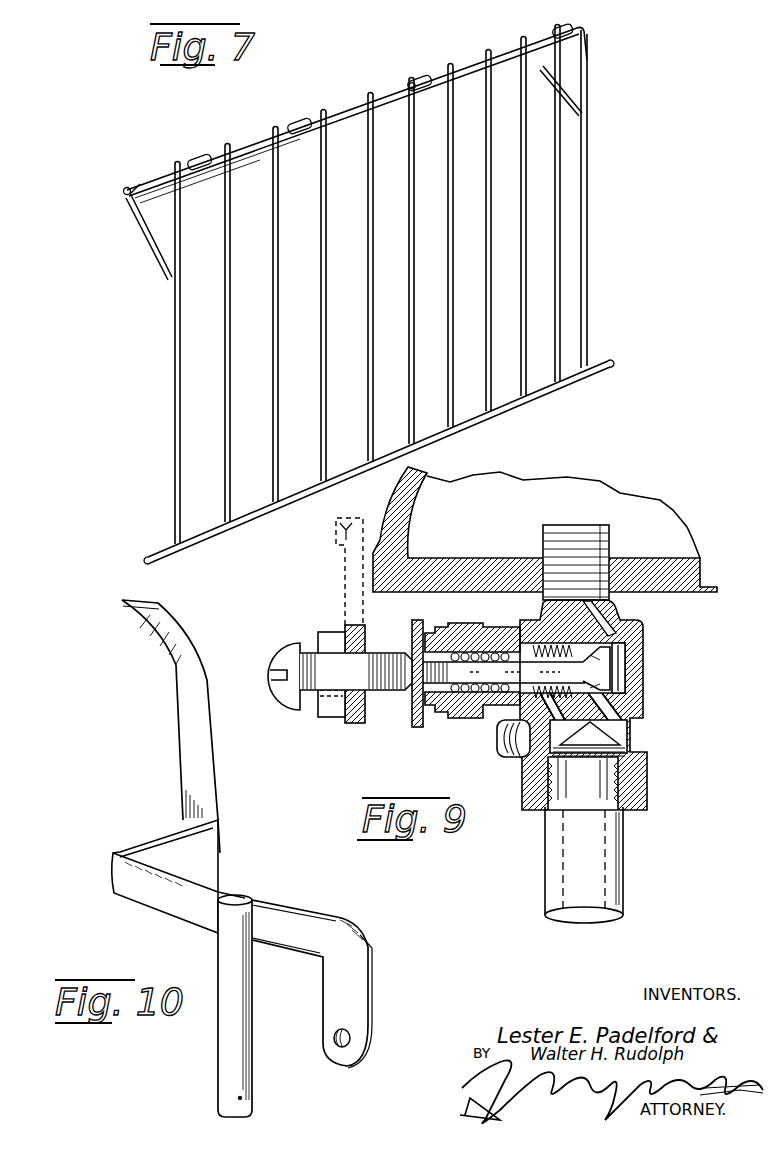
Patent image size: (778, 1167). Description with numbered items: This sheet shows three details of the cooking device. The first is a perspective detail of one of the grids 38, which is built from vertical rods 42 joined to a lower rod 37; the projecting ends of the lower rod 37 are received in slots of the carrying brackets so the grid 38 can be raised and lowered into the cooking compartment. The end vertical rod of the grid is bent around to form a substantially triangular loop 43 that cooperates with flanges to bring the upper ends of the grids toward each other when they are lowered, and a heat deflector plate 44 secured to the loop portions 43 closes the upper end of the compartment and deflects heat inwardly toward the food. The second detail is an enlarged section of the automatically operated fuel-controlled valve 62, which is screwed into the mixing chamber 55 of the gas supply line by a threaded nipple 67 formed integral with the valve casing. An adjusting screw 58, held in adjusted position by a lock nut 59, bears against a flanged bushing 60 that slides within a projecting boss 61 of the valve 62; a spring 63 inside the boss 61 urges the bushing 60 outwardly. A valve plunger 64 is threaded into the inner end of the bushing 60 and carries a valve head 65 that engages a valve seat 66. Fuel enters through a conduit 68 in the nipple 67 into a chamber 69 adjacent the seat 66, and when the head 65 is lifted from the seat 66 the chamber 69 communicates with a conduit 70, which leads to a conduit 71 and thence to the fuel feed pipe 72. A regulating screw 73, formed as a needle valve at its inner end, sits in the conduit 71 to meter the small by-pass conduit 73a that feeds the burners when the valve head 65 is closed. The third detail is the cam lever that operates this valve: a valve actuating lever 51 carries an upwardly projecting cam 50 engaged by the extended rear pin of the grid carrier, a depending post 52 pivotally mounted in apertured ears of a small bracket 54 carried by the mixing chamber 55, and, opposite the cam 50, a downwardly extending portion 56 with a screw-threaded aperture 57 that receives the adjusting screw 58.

In FIG. 7, the lower rod 37 is at (606, 368).
In FIG. 7, the grid 38 is at (387, 93).
In FIG. 7, the vertical rod 42 is at (357, 286).
In FIG. 7, the loop 43 is at (146, 226).
In FIG. 7, the heat deflector plate 44 is at (339, 122).
In FIG. 10, the cam 50 is at (203, 657).
In FIG. 9, the valve actuating lever 51 is at (343, 582).
In FIG. 10, the valve actuating lever 51 is at (275, 871).
In FIG. 10, the depending post 52 is at (243, 997).
In FIG. 9, the bracket 54 is at (343, 526).
In FIG. 9, the mixing chamber 55 is at (413, 513).
In FIG. 9, the downwardly extending portion 56 is at (352, 724).
In FIG. 10, the downwardly extending portion 56 is at (350, 982).
In FIG. 10, the screw threaded aperture 57 is at (336, 1041).
In FIG. 9, the adjusting screw 58 is at (308, 692).
In FIG. 9, the lock nut 59 is at (330, 632).
In FIG. 9, the flanged bushing 60 is at (413, 714).
In FIG. 9, the boss 61 is at (448, 723).
In FIG. 9, the valve 62 is at (645, 652).
In FIG. 9, the spring 63 is at (468, 650).
In FIG. 9, the valve plunger 64 is at (488, 668).
In FIG. 9, the valve head 65 is at (598, 673).
In FIG. 9, the valve seat 66 is at (622, 664).
In FIG. 9, the threaded nipple 67 is at (561, 535).
In FIG. 9, the conduit 68 is at (625, 623).
In FIG. 9, the chamber 69 is at (625, 700).
In FIG. 9, the conduit 70 is at (547, 643).
In FIG. 9, the conduit 71 is at (558, 712).
In FIG. 9, the fuel feed pipe 72 is at (624, 837).
In FIG. 9, the regulating screw 73 is at (500, 747).
In FIG. 9, the by-pass conduit 73a is at (640, 737).